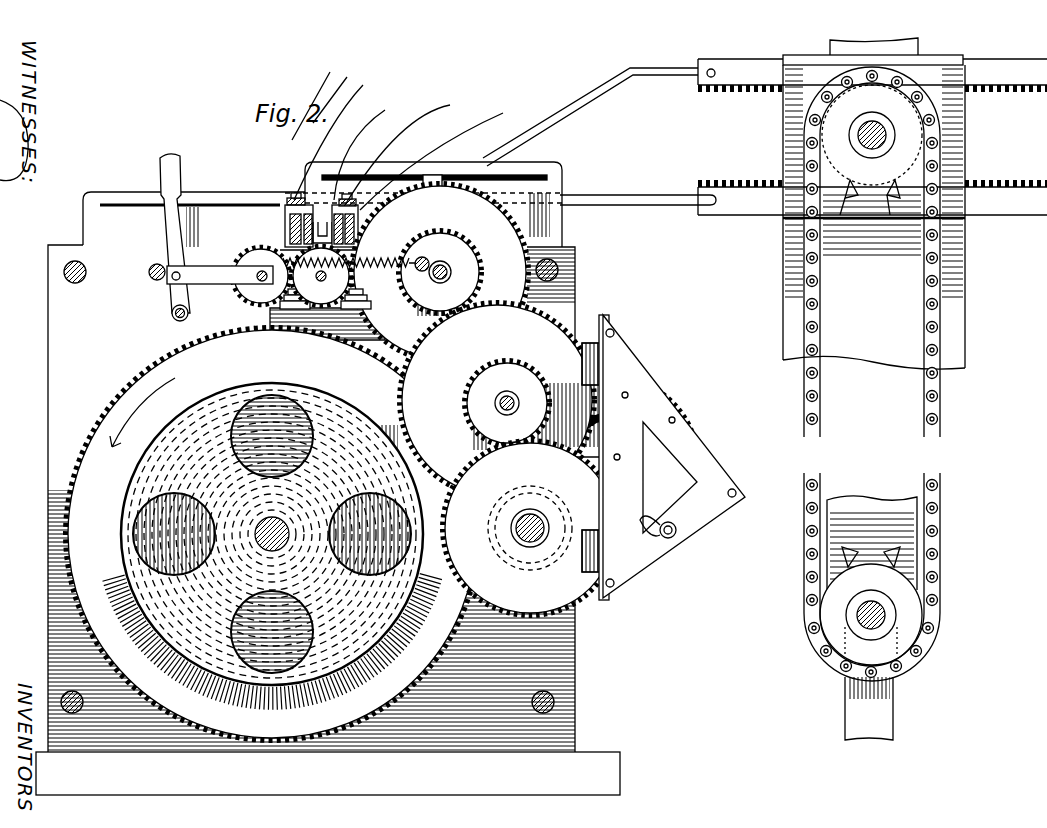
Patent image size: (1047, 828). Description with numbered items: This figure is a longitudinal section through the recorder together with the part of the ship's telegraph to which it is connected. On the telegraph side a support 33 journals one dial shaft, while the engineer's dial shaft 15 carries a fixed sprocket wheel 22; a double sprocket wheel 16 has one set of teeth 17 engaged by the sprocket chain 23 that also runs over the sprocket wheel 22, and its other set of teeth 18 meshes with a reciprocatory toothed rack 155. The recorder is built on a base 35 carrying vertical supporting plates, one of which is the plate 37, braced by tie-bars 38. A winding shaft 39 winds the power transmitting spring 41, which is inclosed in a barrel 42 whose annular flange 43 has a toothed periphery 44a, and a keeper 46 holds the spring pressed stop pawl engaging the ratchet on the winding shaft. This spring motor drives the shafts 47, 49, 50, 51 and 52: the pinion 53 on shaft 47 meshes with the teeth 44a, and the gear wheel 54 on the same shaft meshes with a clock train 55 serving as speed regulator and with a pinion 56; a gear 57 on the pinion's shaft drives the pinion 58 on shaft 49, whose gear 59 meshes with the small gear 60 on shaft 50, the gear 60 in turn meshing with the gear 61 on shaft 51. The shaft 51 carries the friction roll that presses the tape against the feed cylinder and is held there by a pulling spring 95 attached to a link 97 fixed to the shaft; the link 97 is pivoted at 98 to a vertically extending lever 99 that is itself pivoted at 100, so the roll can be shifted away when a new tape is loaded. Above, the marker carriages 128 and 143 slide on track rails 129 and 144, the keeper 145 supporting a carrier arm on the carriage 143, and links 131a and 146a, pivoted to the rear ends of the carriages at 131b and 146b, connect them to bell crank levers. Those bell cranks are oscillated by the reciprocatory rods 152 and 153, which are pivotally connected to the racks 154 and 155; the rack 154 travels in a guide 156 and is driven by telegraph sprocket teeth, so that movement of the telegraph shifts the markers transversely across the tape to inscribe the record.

The shaft 15 is at (890, 138).
The double sprocket wheel 16 is at (905, 150).
The teeth 17 is at (842, 205).
The teeth 18 is at (872, 205).
The sprocket wheel 22 is at (903, 640).
The sprocket chain 23 is at (932, 300).
The support 33 is at (874, 203).
The base 35 is at (328, 773).
The supporting plate 37 is at (575, 648).
The tie-bars 38 is at (64, 274).
The winding shaft 39 is at (265, 540).
The power transmitting spring 41 is at (150, 530).
The barrel 42 is at (157, 440).
The annular flange 43 is at (264, 634).
The teeth 44a is at (72, 456).
The keeper 46 is at (512, 395).
The driven shaft 47 is at (531, 510).
The driven shaft 49 is at (450, 250).
The driven shaft 50 is at (327, 318).
The driven shaft 51 is at (258, 310).
The driven shaft 52 is at (149, 272).
The pinion 53 is at (530, 565).
The gear wheel 54 is at (600, 597).
The clock train 55 is at (700, 403).
The pinion 56 is at (582, 372).
The gear 57 is at (499, 400).
The pinion 58 is at (536, 265).
The gear 59 is at (440, 272).
The small gear 60 is at (312, 300).
The gear 61 is at (300, 300).
The pulling spring 95 is at (427, 272).
The link 97 is at (208, 268).
The pivot 98 is at (171, 279).
The lever 99 is at (171, 316).
The pivot 100 is at (190, 300).
The reciprocatory carriage 128 is at (288, 222).
The track rail 129 is at (290, 230).
The link 131a is at (348, 133).
The pivot 131b is at (379, 146).
The reciprocatory carriage 143 is at (358, 230).
The track rail 144 is at (433, 177).
The keeper 145 is at (355, 205).
The link 146a is at (417, 147).
The pivot 146b is at (451, 153).
The reciprocatory rod 152 is at (630, 189).
The reciprocatory rod 153 is at (597, 100).
The reciprocatory toothed rack 154 is at (760, 169).
The reciprocatory toothed rack 155 is at (748, 68).
The guide 156 is at (960, 230).